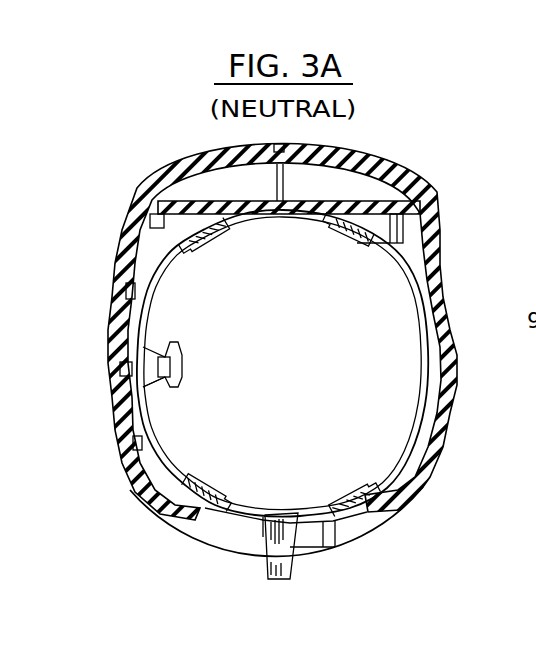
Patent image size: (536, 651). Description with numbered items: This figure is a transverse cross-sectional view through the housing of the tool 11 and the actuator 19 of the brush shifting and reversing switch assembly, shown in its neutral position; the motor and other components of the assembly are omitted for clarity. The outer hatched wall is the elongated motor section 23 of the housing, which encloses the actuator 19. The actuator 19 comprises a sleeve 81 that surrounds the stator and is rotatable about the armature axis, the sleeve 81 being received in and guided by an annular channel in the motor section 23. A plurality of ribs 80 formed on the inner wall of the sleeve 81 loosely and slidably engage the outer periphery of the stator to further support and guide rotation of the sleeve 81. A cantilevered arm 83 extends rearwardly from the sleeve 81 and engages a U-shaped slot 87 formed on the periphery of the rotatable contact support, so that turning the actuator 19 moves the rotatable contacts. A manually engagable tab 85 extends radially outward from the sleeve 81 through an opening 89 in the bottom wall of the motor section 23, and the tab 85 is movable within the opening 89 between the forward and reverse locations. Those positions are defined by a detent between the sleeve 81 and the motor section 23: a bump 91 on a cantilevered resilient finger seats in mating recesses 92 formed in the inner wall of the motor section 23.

The tool 11 is at (410, 146).
The actuator 19 is at (421, 378).
The motor section 23 is at (426, 200).
The ribs 80 is at (217, 250).
The sleeve 81 is at (271, 222).
The cantilevered arm 83 is at (156, 346).
The tab 85 is at (266, 570).
The U-shaped slot 87 is at (166, 389).
The opening 89 is at (207, 533).
The bump 91 is at (120, 368).
The recesses 92 is at (126, 273).